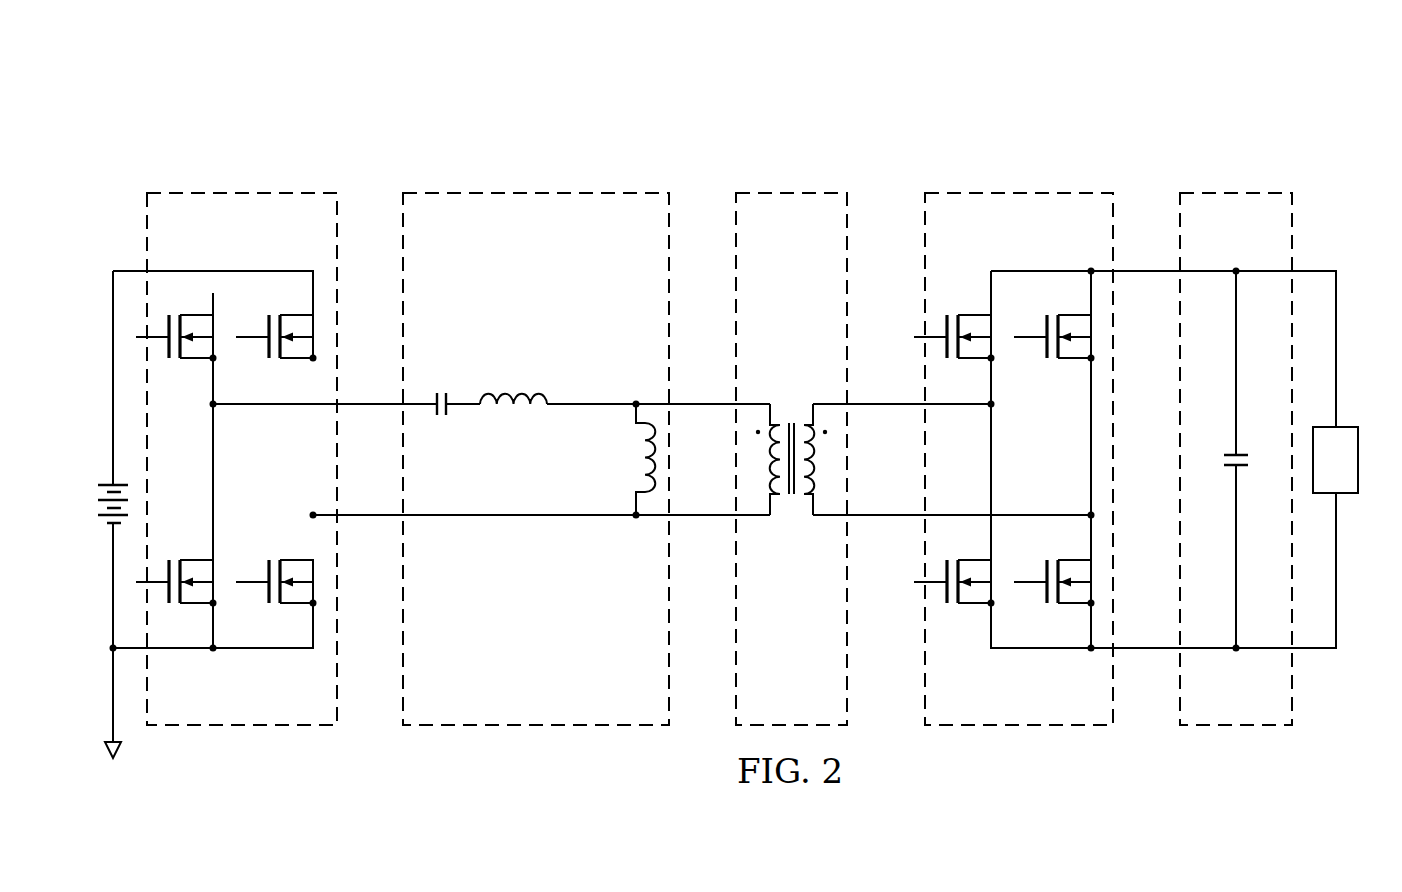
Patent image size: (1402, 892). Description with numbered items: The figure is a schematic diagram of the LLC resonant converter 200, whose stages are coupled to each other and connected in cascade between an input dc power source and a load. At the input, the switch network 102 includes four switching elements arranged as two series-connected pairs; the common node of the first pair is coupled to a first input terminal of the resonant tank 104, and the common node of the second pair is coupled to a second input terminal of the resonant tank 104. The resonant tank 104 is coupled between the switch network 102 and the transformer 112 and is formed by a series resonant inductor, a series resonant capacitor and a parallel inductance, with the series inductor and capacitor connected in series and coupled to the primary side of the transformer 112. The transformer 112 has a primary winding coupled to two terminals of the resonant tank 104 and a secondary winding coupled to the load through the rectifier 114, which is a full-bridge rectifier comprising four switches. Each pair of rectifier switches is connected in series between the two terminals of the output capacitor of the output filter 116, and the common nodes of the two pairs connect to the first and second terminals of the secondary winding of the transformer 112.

The LLC resonant converter 200 is at (423, 108).
The switch network 102 is at (231, 192).
The resonant tank 104 is at (536, 192).
The transformer 112 is at (791, 192).
The rectifier 114 is at (1033, 192).
The output filter 116 is at (1236, 192).